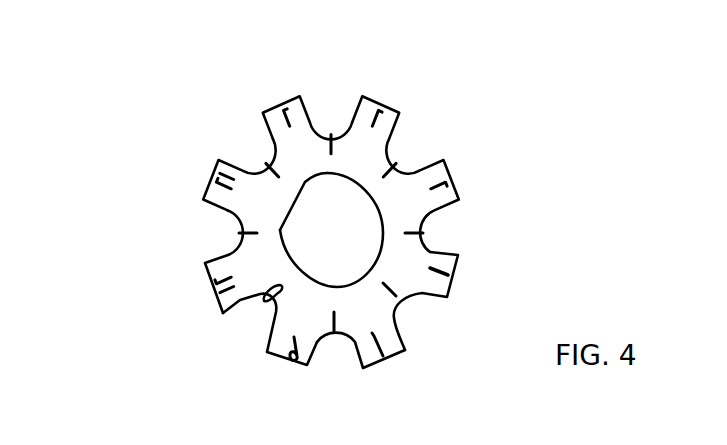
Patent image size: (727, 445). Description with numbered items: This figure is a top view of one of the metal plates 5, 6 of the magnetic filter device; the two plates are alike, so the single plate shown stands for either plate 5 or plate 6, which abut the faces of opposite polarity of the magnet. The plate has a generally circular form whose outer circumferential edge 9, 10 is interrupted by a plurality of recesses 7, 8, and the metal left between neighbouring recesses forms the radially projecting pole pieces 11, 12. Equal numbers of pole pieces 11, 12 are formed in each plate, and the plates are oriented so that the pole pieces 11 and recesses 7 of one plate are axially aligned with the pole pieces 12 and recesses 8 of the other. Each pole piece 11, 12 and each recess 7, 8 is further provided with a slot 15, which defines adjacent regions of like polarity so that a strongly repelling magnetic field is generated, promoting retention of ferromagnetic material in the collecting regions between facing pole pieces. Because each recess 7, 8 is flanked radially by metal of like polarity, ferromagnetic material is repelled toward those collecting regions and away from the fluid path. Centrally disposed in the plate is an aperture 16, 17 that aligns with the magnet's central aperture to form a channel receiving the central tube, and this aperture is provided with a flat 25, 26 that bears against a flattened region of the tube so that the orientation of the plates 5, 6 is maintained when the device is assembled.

The metal plate 5 is at (336, 216).
The metal plate 6 is at (336, 216).
The recess 7 is at (170, 278).
The recess 8 is at (200, 240).
The outer circumferential edge 9 is at (427, 87).
The outer circumferential edge 10 is at (393, 113).
The pole piece 11 is at (150, 185).
The pole piece 12 is at (207, 192).
The slot 15 is at (307, 365).
The aperture 16 is at (374, 175).
The aperture 17 is at (374, 175).
The flat 25 is at (230, 147).
The flat 26 is at (308, 192).